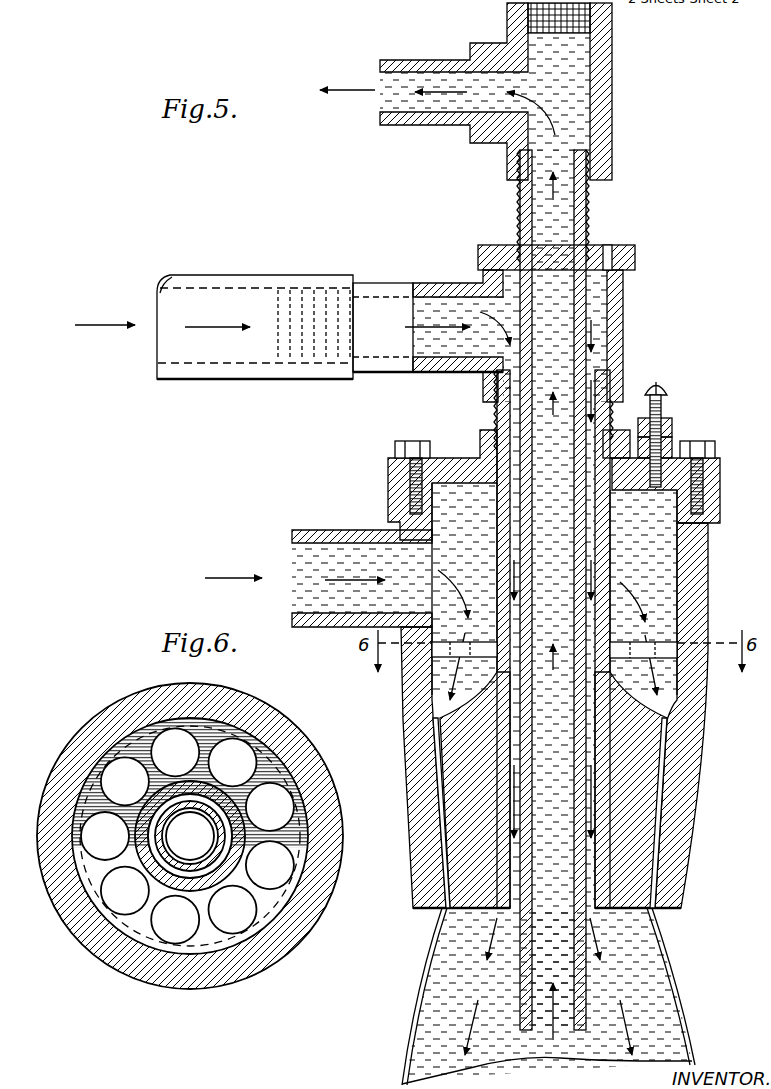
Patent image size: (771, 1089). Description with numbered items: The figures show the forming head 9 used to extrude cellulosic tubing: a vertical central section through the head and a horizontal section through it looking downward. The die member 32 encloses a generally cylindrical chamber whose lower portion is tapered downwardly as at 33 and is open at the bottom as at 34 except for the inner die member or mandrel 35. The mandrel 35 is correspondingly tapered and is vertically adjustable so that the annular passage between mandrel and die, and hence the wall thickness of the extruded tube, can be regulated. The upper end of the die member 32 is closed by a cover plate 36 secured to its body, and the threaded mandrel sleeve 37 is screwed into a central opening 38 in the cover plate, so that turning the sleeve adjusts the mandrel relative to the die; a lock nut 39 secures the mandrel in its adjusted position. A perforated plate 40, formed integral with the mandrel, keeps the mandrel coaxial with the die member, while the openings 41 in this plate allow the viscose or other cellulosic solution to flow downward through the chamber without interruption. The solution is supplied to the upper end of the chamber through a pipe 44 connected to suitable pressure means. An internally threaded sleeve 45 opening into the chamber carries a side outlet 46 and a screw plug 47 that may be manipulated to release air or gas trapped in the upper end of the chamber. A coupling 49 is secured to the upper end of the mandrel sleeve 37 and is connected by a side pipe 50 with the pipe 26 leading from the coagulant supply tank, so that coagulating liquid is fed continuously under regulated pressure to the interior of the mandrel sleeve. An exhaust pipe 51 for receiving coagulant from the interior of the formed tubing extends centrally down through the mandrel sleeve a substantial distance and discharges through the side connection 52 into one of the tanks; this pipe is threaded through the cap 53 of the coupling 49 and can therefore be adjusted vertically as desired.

In FIG. 5, the forming head 9 is at (712, 607).
In FIG. 5, the pipe 26 is at (207, 277).
In FIG. 5, the die member 32 is at (708, 591).
In FIG. 6, the die member 32 is at (286, 729).
In FIG. 5, the tapered lower portion 33 is at (668, 797).
In FIG. 5, the open bottom 34 is at (668, 912).
In FIG. 5, the mandrel 35 is at (660, 830).
In FIG. 5, the cover plate 36 is at (452, 458).
In FIG. 5, the mandrel sleeve 37 is at (602, 639).
In FIG. 6, the mandrel sleeve 37 is at (240, 812).
In FIG. 5, the central opening 38 is at (613, 440).
In FIG. 5, the lock nut 39 is at (497, 425).
In FIG. 5, the perforated plate 40 is at (558, 685).
In FIG. 6, the perforated plate 40 is at (140, 742).
In FIG. 5, the openings 41 is at (452, 652).
In FIG. 6, the openings 41 is at (88, 822).
In FIG. 5, the pipe 44 is at (323, 531).
In FIG. 5, the internally threaded sleeve 45 is at (672, 422).
In FIG. 5, the side outlet 46 is at (672, 438).
In FIG. 5, the screw plug 47 is at (668, 392).
In FIG. 5, the coupling 49 is at (624, 308).
In FIG. 5, the side pipe 50 is at (433, 283).
In FIG. 5, the exhaust pipe 51 is at (590, 217).
In FIG. 6, the exhaust pipe 51 is at (216, 852).
In FIG. 5, the side connection 52 is at (420, 125).
In FIG. 5, the cap 53 is at (632, 247).